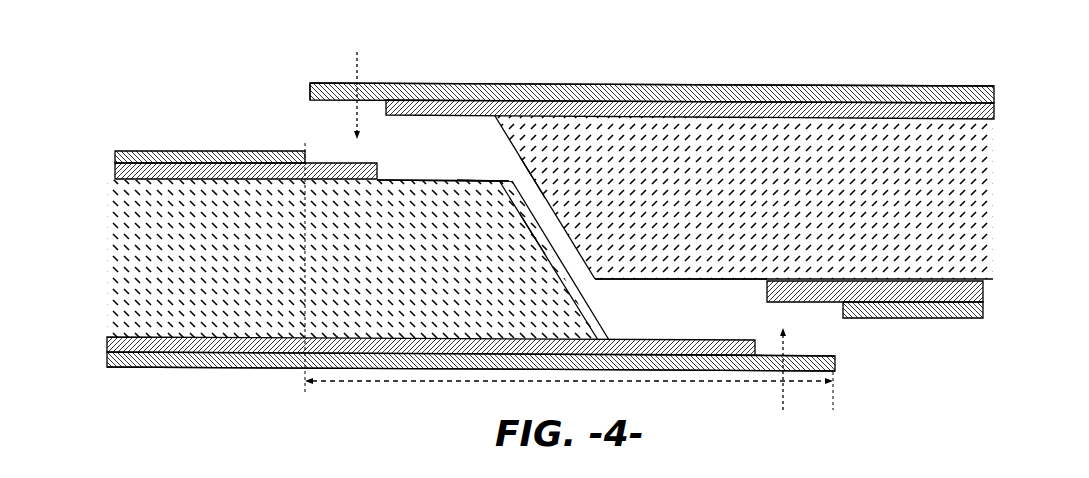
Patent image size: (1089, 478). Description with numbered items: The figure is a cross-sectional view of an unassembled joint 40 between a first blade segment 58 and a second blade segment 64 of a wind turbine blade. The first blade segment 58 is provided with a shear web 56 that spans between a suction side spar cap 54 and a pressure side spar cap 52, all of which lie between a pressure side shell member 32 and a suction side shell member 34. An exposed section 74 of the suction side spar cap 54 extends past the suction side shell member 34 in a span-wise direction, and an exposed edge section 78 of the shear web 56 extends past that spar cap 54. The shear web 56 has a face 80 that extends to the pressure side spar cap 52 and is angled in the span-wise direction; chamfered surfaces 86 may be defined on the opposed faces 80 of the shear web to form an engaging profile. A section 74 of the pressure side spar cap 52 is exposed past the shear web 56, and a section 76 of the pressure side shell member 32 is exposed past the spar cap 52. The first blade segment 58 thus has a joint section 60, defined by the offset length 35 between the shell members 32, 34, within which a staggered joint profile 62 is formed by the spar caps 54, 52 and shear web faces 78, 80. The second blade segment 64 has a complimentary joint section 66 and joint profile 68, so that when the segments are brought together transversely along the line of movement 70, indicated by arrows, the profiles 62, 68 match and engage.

The joint 40 is at (222, 109).
The suction side shell member 34 is at (140, 150).
The suction side spar cap 54 is at (115, 171).
The shear web 56 is at (159, 247).
The pressure side spar cap 52 is at (107, 338).
The first blade segment 58 is at (186, 372).
The pressure side shell member 32 is at (247, 368).
The offset length 35 is at (375, 385).
The line of movement 70 is at (358, 68).
The exposed section of pressure side shell member 76 is at (345, 103).
The exposed section of spar cap 74 is at (362, 162).
The joint profile 62 is at (399, 170).
The exposed edge section of shear web 78 is at (457, 179).
The chamfered surfaces 86 is at (552, 183).
The face of shear web 80 is at (552, 216).
The joint section 60 is at (395, 224).
The complimentary joint section 66 is at (688, 190).
The joint profile 68 is at (728, 286).
The second blade segment 64 is at (815, 82).